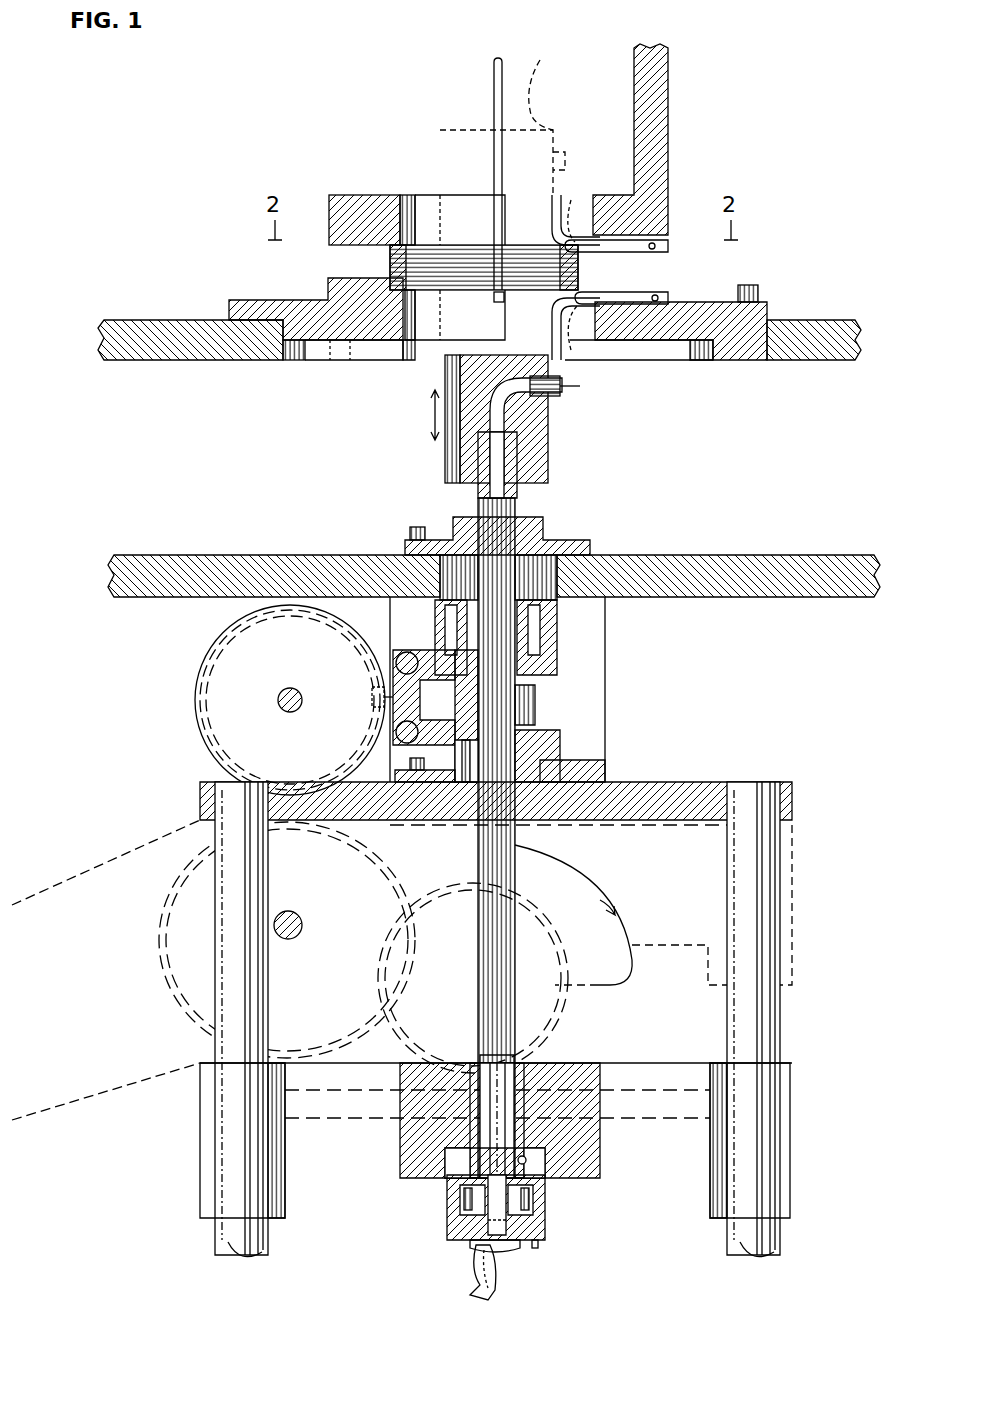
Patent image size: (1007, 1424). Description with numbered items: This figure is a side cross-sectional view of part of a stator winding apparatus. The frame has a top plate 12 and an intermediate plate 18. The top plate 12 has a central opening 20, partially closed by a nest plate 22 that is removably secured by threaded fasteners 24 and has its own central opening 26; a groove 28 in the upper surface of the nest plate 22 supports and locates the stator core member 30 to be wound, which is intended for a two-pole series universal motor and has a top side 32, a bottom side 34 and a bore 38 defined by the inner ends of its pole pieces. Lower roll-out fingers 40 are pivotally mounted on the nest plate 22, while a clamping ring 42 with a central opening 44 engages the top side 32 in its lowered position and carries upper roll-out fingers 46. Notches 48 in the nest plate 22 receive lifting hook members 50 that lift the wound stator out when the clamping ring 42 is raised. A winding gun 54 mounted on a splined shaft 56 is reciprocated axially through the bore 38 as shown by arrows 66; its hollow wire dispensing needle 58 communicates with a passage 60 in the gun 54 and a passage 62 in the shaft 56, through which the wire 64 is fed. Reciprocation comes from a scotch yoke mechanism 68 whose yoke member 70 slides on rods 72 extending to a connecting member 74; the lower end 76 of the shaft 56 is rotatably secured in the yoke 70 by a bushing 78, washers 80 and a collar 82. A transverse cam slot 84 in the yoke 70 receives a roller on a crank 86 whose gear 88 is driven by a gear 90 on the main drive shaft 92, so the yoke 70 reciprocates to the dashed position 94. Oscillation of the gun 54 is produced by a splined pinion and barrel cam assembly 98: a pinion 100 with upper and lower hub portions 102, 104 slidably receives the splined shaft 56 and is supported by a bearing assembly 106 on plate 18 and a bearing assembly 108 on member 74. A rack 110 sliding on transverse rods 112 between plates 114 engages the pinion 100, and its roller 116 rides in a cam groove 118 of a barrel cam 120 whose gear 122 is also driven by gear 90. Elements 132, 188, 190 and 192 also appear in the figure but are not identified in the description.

The top plate 12 is at (800, 322).
The plate 18 is at (785, 556).
The central opening 20 is at (290, 360).
The nest plate 22 is at (265, 300).
The threaded fasteners 24 is at (748, 285).
The central opening 26 is at (410, 342).
The groove 28 is at (330, 342).
The stator core member 30 is at (440, 140).
The top side 32 is at (500, 240).
The bottom side 34 is at (438, 292).
The bore 38 is at (516, 255).
The lower roll-out fingers 40 is at (640, 298).
The clamping ring 42 is at (360, 212).
The central opening 44 is at (408, 240).
The upper roll-out fingers 46 is at (640, 242).
The notches 48 is at (504, 302).
The lifting hook members 50 is at (493, 62).
The winding gun 54 is at (445, 445).
The splined shaft 56 is at (545, 838).
The wire dispensing needle 58 is at (562, 390).
The passage 60 is at (545, 420).
The passage 62 is at (518, 485).
The wire 64 is at (580, 386).
The arrows 66 is at (430, 412).
The scotch yoke mechanism 68 is at (378, 1197).
The yoke member 70 is at (680, 1066).
The rods 72 is at (778, 1020).
The connecting member 74 is at (665, 783).
The lower end 76 is at (440, 1100).
The bushing 78 is at (535, 1076).
The washers 80 is at (495, 1100).
The collar 82 is at (555, 1160).
The transverse cam slot 84 is at (658, 1120).
The crank 86 is at (615, 950).
The gear 88 is at (570, 998).
The gear 90 is at (318, 1023).
The main drive shaft 92 is at (295, 918).
The dashed-line position 94 is at (795, 850).
The splined pinion and barrel cam assembly 98 is at (584, 688).
The pinion 100 is at (536, 700).
The upper hub portion 102 is at (545, 532).
The lower hub portion 104 is at (537, 740).
The bearing assembly 106 is at (561, 592).
The bearing assembly 108 is at (548, 762).
The rack 110 is at (388, 703).
The transverse rods 112 is at (405, 652).
The plates 114 is at (598, 612).
The roller 116 is at (372, 690).
The cam groove 118 is at (196, 665).
The barrel cam 120 is at (258, 677).
The gear 122 is at (196, 703).
The coupling block 132 is at (556, 1214).
The drive belt 188 is at (62, 910).
The upper clamp 190 is at (575, 198).
The lower clamp 192 is at (568, 330).